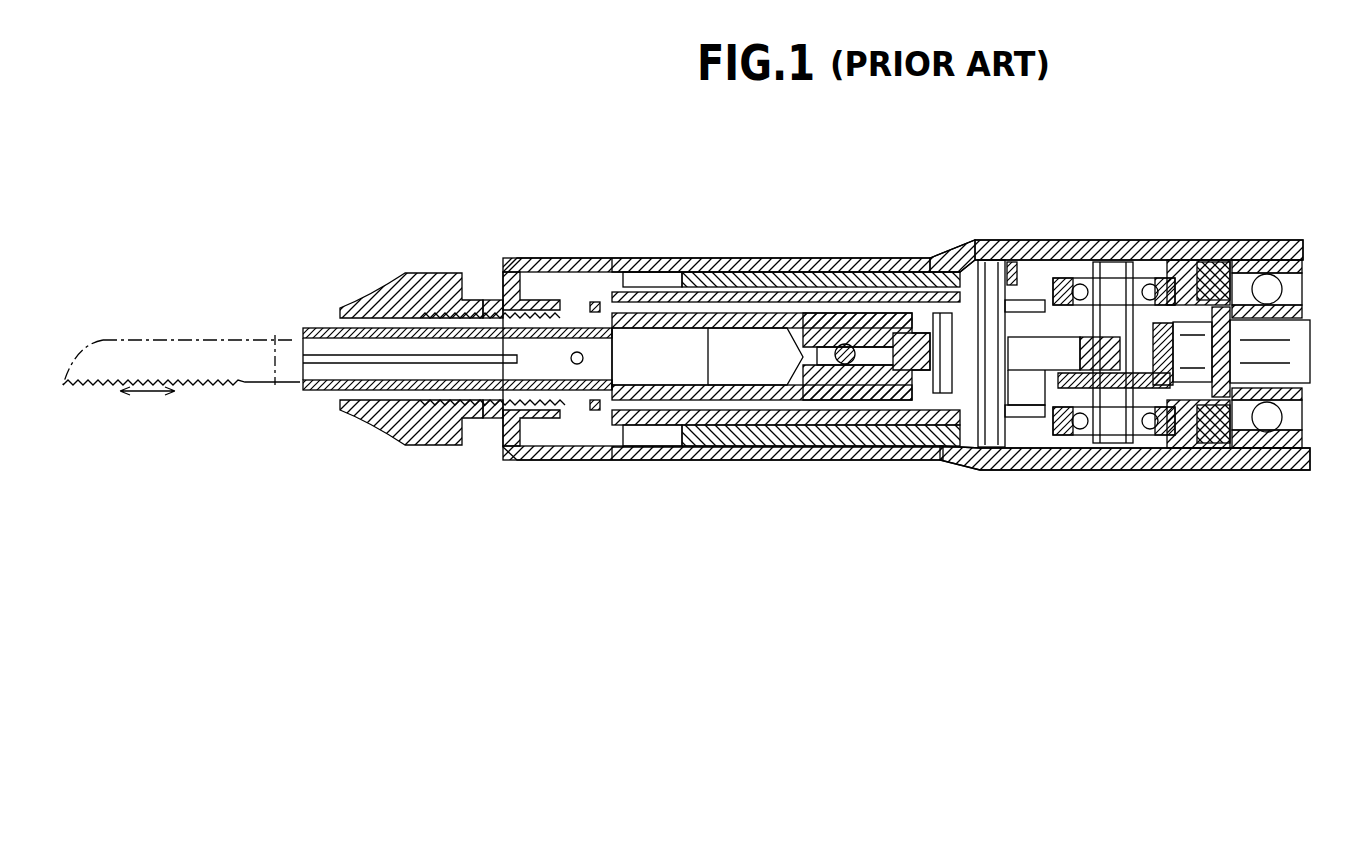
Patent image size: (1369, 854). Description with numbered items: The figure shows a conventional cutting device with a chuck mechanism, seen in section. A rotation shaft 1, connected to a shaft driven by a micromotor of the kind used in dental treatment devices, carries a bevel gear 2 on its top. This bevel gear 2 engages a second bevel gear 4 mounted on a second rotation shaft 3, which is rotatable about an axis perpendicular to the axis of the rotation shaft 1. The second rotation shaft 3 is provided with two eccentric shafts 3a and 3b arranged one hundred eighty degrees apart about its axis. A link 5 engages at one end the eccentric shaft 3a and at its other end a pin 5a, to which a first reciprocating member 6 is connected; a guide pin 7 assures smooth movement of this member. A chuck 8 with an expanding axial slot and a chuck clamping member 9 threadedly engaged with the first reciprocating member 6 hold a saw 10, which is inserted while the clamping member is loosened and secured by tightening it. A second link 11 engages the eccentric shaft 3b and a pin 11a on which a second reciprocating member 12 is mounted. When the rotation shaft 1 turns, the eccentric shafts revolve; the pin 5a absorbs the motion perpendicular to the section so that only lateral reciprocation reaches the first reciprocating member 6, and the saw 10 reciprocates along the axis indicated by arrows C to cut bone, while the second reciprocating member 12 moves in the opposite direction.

The rotation shaft 1 is at (1270, 346).
The bevel gear 2 is at (1170, 350).
The second rotation shaft 3 is at (1110, 276).
The eccentric shaft 3a is at (1100, 350).
The eccentric shaft 3b is at (1112, 436).
The second bevel gear 4 is at (1158, 380).
The link 5 is at (1013, 282).
The pin 5a is at (945, 315).
The first reciprocating member 6 is at (733, 328).
The guide pin 7 is at (845, 348).
The chuck 8 is at (320, 392).
The chuck clamping member 9 is at (433, 273).
The saw 10 is at (258, 340).
The link 11 is at (1040, 405).
The pin 11a is at (1000, 300).
The second reciprocating member 12 is at (805, 282).
The arrows C is at (148, 393).